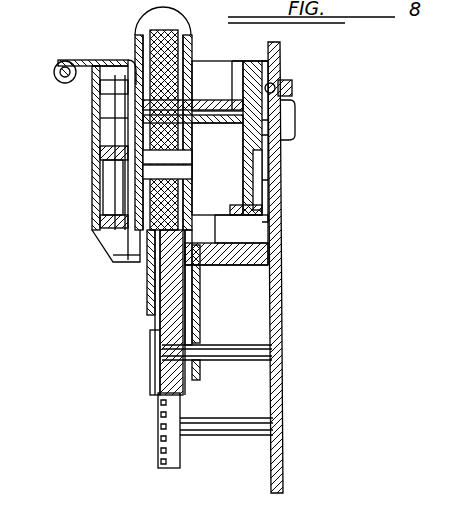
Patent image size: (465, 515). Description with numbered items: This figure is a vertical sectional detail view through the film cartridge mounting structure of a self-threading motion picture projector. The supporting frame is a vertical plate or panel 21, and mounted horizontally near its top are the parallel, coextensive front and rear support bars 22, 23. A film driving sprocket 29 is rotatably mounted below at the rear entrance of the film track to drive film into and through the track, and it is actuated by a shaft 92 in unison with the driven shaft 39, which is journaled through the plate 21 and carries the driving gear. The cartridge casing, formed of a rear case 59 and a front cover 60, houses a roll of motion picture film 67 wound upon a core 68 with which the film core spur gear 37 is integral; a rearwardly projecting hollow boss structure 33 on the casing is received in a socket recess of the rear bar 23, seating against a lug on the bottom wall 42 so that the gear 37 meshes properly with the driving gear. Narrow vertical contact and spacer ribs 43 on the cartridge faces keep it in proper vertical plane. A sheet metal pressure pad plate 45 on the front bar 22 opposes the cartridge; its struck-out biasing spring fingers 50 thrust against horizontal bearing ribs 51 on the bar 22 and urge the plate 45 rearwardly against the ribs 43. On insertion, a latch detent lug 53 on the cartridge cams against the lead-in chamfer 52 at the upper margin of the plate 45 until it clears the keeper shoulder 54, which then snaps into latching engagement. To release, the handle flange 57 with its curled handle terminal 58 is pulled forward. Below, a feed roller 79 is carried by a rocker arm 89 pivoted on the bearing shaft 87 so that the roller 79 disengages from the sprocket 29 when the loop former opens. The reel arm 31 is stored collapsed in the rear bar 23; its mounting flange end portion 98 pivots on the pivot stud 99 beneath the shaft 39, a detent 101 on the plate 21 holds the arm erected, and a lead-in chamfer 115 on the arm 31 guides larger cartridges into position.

The vertical plate or panel 21 is at (281, 388).
The front support bar 22 is at (92, 106).
The rear support bar 23 is at (271, 262).
The film driving sprocket 29 is at (158, 443).
The reel arm 31 is at (212, 62).
The boss structure 33 is at (240, 232).
The film core spur gear 37 is at (236, 262).
The driven shaft 39 is at (294, 131).
The bottom wall 42 is at (269, 249).
The contact and spacer ribs 43 is at (152, 325).
The pressure pad plate 45 is at (113, 258).
The biasing spring fingers 50 is at (100, 150).
The horizontal bearing ribs 51 is at (116, 185).
The lead-in chamfer 52 is at (128, 62).
The latch detent lug 53 is at (115, 118).
The keeper shoulder 54 is at (100, 86).
The handle flange 57 is at (74, 60).
The curled handle terminal 58 is at (55, 68).
The rear section or case 59 is at (188, 290).
The front section or cover 60 is at (147, 304).
The roll of motion picture film 67 is at (192, 304).
The core 68 is at (198, 100).
The feed roller 79 is at (160, 370).
The bearing shaft 87 is at (236, 360).
The rocker arm 89 is at (200, 332).
The shaft 92 is at (230, 436).
The mounting flange end portion 98 is at (256, 61).
The pivot pin or stud 99 is at (258, 180).
The detent 101 is at (280, 84).
The lead-in chamfer 115 is at (195, 42).